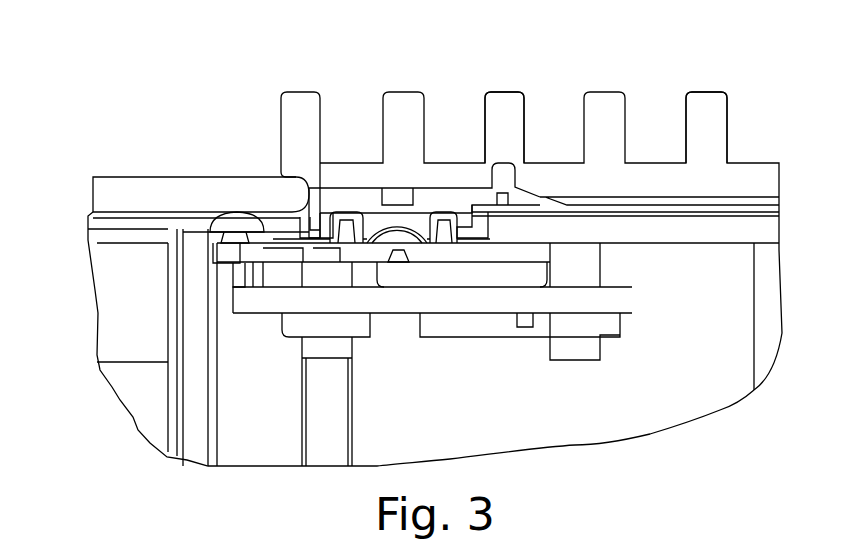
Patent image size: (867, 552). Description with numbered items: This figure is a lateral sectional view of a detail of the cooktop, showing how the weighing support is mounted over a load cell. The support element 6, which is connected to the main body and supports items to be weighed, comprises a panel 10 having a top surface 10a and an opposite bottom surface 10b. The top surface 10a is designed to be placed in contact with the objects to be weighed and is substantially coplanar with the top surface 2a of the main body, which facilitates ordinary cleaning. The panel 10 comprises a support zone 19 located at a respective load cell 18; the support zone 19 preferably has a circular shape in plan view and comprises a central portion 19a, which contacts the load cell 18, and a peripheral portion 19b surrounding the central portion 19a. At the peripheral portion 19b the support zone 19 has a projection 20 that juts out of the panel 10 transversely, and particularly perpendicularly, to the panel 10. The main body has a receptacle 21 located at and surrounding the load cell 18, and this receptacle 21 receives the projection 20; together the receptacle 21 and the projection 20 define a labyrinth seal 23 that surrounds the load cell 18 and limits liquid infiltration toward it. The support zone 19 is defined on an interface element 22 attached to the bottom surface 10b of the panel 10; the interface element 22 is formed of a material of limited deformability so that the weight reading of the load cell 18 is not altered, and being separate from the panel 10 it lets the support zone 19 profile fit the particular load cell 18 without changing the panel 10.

The top surface 2a is at (146, 178).
The support element 6 is at (513, 94).
The panel 10 is at (555, 172).
The top surface 10a is at (648, 162).
The bottom surface 10b is at (667, 194).
The load cell 18 is at (369, 238).
The support zone 19 is at (424, 246).
The central portion 19a is at (367, 242).
The peripheral portion 19b is at (467, 232).
The projection 20 is at (320, 197).
The receptacle 21 is at (320, 238).
The interface element 22 is at (437, 194).
The labyrinth seal 23 is at (455, 236).